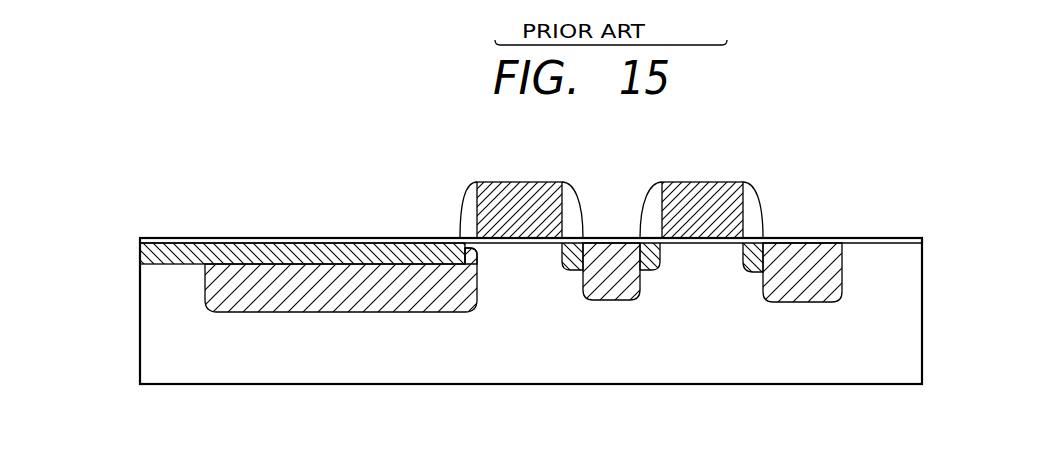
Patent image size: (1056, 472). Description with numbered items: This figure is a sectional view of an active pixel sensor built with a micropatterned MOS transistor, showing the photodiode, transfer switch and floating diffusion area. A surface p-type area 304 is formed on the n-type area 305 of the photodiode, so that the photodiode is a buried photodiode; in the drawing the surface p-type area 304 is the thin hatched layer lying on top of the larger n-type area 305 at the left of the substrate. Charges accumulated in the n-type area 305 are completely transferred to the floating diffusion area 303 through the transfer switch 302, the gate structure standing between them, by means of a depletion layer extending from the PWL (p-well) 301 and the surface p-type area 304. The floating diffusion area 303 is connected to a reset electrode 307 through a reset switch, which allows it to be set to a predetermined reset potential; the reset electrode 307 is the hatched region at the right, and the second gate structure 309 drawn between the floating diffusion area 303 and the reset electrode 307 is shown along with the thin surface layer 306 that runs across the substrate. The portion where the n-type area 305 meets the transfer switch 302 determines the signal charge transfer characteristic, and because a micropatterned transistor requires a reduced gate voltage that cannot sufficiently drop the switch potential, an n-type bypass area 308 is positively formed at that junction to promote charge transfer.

The PWL (p-well) 301 is at (368, 365).
The transfer switch 302 is at (502, 182).
The floating diffusion area 303 is at (616, 295).
The surface p-type area 304 is at (337, 253).
The n-type area 305 is at (222, 293).
The gate insulating film 306 is at (845, 243).
The reset electrode 307 is at (838, 281).
The n-type bypass area 308 is at (472, 252).
The gate electrode 309 is at (715, 182).